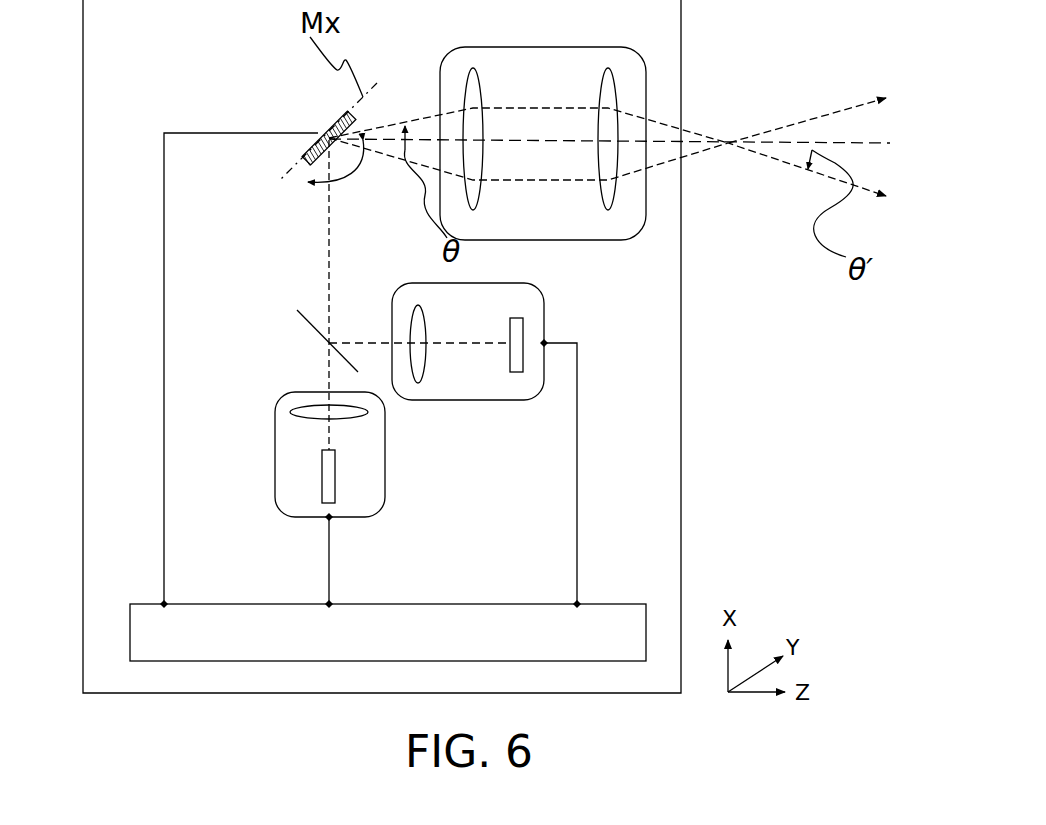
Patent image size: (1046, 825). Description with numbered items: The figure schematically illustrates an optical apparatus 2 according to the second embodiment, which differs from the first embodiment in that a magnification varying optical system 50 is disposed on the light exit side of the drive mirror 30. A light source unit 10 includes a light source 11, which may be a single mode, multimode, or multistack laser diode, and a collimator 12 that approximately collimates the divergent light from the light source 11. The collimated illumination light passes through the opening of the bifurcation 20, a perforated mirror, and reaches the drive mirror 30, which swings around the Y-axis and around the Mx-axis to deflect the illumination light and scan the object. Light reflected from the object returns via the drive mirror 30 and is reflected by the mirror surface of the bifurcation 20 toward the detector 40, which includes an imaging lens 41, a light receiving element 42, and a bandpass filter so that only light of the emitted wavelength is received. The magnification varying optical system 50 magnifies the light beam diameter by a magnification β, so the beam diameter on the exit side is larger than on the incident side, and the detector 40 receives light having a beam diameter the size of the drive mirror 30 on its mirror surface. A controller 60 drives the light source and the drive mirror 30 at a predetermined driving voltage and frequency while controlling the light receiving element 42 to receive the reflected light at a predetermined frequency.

The optical apparatus 2 is at (83, 107).
The light source unit 10 is at (317, 491).
The light source 11 is at (335, 490).
The collimator 12 is at (302, 419).
The bifurcation 20 is at (300, 314).
The drive mirror 30 is at (330, 117).
The detector 40 is at (496, 376).
The imaging lens 41 is at (417, 333).
The light receiving element 42 is at (520, 322).
The magnification varying optical system 50 is at (640, 62).
The controller 60 is at (131, 603).